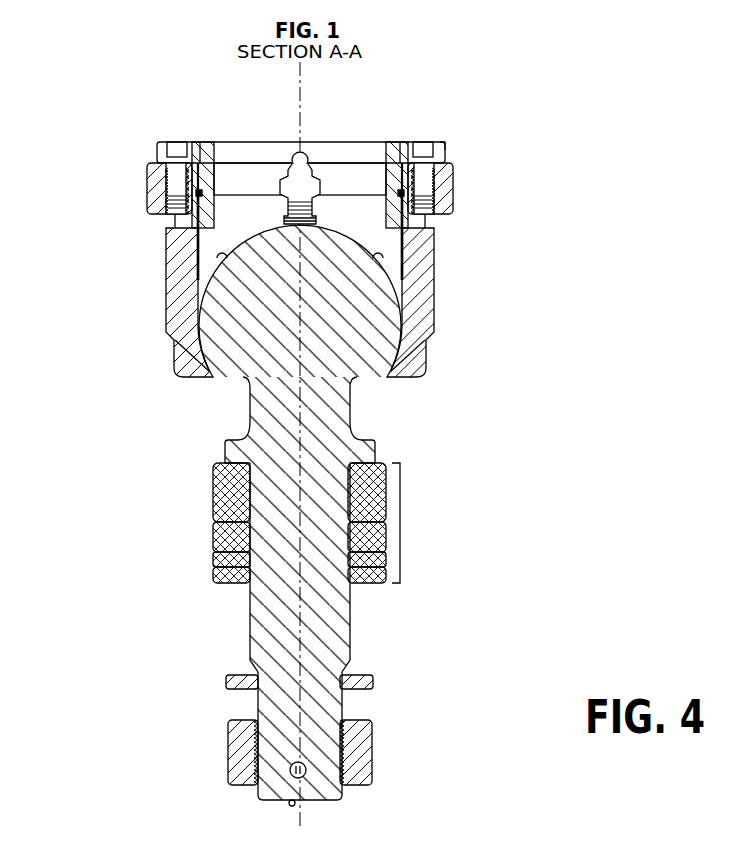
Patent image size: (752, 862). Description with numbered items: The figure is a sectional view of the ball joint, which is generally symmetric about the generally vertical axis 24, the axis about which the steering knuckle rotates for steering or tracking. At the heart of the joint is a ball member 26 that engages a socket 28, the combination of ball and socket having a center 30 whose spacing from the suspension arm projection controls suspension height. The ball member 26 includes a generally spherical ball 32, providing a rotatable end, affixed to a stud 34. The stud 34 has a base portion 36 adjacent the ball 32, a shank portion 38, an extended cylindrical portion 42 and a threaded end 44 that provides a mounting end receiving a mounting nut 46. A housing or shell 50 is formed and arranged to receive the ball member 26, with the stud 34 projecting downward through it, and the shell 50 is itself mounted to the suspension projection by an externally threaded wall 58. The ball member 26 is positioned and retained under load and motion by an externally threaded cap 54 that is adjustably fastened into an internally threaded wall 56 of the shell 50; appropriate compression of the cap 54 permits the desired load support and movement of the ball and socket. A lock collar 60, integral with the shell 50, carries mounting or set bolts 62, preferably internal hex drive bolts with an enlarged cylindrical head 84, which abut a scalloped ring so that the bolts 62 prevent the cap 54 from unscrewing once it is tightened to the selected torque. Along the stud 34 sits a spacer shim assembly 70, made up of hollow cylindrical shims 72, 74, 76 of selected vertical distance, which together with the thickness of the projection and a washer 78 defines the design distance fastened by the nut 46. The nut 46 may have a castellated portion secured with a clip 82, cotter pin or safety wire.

The generally vertical axis 24 is at (298, 95).
The ball member 26 is at (398, 298).
The socket 28 is at (200, 323).
The center 30 is at (305, 315).
The generally spherical ball 32 is at (370, 347).
The stud 34 is at (250, 410).
The base portion 36 is at (280, 393).
The shank portion 38 is at (352, 411).
The extended cylindrical portion 42 is at (335, 617).
The threaded end 44 is at (262, 757).
The mounting nut 46 is at (372, 743).
The housing or shell 50 is at (167, 268).
The externally threaded cap 54 is at (375, 143).
The internally threaded wall 56 is at (427, 223).
The externally threaded wall 58 is at (185, 162).
The lock collar 60 is at (147, 176).
The mounting or set bolts 62 is at (442, 150).
The spacer shim assembly 70 is at (407, 518).
The shim 72 is at (232, 492).
The shim 74 is at (215, 537).
The shim 76 is at (230, 578).
The washer 78 is at (374, 682).
The clip 82 is at (288, 803).
The enlarged cylindrical head 84 is at (447, 142).